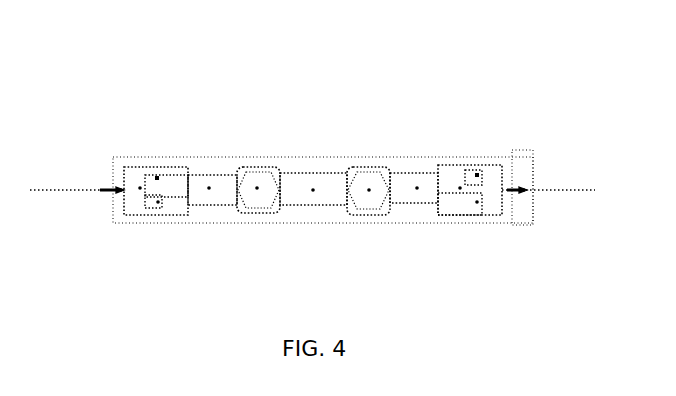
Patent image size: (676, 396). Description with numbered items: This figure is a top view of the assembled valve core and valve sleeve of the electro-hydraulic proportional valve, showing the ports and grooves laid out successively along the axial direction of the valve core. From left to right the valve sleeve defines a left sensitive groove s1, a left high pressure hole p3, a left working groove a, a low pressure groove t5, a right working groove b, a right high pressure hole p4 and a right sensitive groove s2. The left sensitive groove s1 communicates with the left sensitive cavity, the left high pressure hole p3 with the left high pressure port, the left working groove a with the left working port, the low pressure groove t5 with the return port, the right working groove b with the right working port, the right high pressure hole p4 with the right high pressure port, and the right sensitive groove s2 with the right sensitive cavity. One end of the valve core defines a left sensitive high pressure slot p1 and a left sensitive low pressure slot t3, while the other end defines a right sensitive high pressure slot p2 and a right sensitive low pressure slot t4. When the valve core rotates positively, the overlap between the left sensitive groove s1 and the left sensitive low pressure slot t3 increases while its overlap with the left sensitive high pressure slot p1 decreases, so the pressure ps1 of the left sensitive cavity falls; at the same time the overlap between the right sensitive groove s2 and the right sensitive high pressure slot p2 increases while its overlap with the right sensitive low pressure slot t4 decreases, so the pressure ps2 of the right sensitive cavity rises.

The pressure of the left sensitive cavity ps1 is at (77, 172).
The pressure of the right sensitive cavity ps2 is at (548, 173).
The left sensitive groove s1 is at (145, 215).
The right sensitive groove s2 is at (473, 215).
The left sensitive high pressure slot p1 is at (210, 97).
The right sensitive high pressure slot p2 is at (535, 95).
The left high pressure hole p3 is at (212, 205).
The right high pressure hole p4 is at (425, 203).
The left sensitive low pressure slot t3 is at (130, 97).
The right sensitive low pressure slot t4 is at (467, 97).
The low pressure groove t5 is at (322, 205).
The left working groove a is at (263, 213).
The right working groove b is at (375, 215).